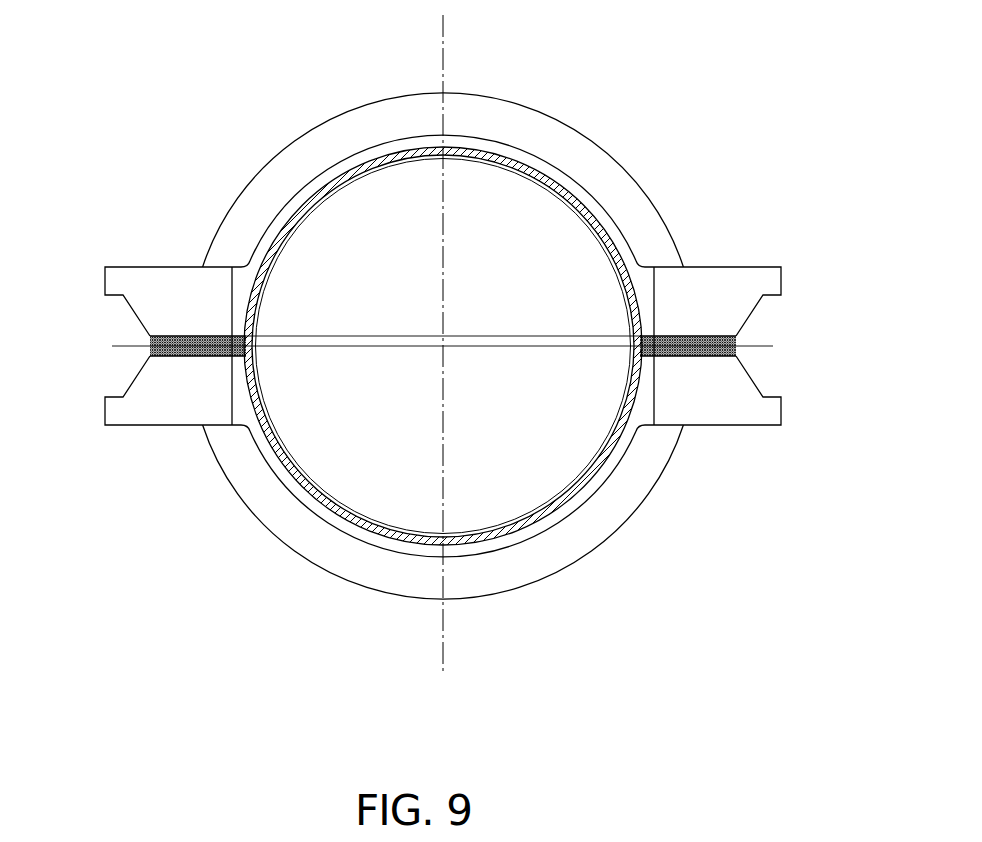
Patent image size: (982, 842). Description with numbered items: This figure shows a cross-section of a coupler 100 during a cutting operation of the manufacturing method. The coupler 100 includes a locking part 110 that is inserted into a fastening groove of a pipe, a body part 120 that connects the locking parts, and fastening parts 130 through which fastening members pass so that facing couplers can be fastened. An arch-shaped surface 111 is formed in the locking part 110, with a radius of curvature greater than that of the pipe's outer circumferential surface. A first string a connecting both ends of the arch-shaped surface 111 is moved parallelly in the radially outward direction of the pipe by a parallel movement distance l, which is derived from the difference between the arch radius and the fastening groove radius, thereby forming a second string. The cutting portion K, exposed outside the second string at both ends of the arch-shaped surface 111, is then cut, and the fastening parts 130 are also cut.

The coupler 100 is at (460, 374).
The locking part 110 is at (530, 160).
The arch-shaped surface 111 is at (373, 160).
The body part 120 is at (598, 158).
The fastening part 130 is at (740, 382).
The cutting portion K is at (148, 343).
The first string a is at (368, 297).
The parallel movement distance l is at (483, 375).